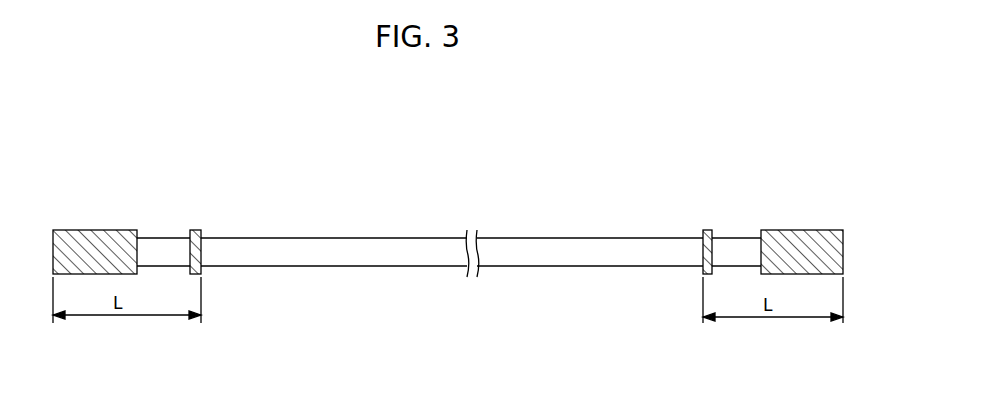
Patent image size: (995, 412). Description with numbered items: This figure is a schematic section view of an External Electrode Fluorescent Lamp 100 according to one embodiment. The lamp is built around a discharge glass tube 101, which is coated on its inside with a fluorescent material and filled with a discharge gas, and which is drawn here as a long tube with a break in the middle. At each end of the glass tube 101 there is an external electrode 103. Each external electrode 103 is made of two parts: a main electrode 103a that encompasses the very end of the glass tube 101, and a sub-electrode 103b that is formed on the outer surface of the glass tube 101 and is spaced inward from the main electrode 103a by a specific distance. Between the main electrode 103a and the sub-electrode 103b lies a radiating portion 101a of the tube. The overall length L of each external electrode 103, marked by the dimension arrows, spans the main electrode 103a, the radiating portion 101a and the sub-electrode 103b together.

The External Electrode Fluorescent Lamp 100 is at (742, 130).
The discharge glass tube 101 is at (289, 246).
The radiating portion 101a is at (735, 246).
The external electrode 103 is at (216, 172).
The main electrode 103a is at (102, 230).
The sub-electrode 103b is at (196, 230).